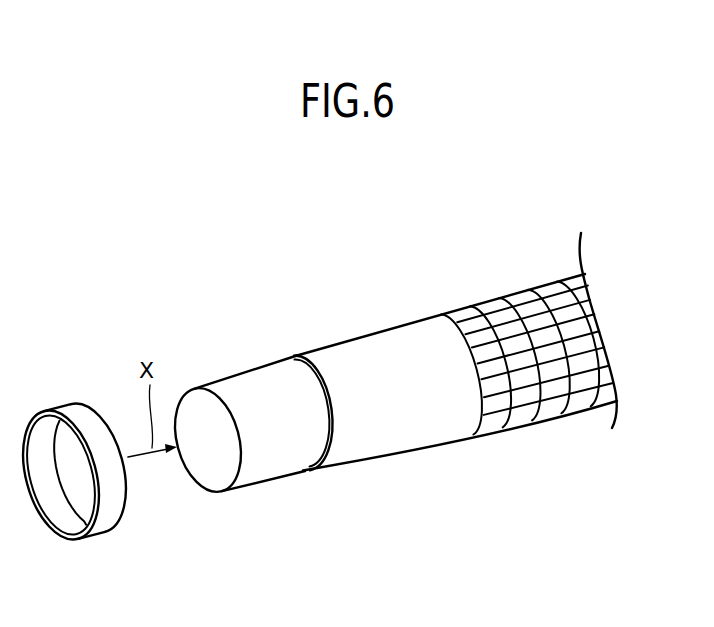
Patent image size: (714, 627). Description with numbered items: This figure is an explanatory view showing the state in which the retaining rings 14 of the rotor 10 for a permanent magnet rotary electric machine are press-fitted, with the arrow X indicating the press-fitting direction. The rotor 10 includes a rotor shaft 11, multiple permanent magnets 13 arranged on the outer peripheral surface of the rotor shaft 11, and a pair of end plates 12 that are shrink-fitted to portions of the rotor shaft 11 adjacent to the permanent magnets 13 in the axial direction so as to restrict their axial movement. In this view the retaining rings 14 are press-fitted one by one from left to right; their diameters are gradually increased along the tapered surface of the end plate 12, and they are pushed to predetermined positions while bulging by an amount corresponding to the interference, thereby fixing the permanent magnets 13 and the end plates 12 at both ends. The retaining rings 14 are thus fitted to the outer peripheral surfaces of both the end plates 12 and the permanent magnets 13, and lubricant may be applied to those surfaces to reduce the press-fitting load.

The rotor 10 is at (584, 472).
The rotor shaft 11 is at (243, 372).
The end plate 12 is at (364, 335).
The permanent magnets 13 is at (515, 292).
The retaining rings 14 is at (65, 407).